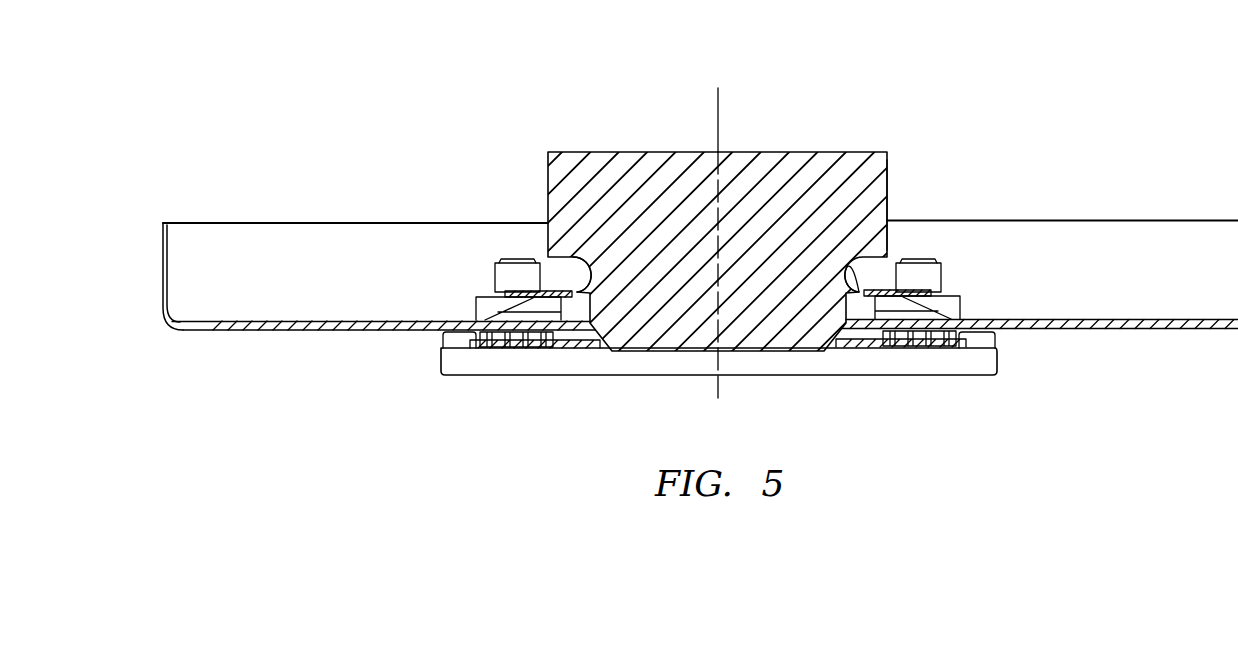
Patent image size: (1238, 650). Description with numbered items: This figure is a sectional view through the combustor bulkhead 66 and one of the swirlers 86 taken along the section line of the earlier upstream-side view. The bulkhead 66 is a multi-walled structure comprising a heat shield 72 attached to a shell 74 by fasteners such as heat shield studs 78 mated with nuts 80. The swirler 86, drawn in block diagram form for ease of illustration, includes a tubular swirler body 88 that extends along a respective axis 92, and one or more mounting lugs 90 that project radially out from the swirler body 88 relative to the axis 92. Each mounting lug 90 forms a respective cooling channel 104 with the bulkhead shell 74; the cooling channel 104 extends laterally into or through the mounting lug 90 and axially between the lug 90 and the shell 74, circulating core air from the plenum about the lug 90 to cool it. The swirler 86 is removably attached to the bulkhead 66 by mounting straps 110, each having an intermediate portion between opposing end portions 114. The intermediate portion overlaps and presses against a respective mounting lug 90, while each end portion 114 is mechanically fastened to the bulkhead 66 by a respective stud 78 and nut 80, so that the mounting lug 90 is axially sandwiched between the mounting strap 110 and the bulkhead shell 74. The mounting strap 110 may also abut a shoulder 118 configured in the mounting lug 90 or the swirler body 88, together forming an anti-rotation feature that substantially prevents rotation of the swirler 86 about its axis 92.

The combustor bulkhead 66 is at (410, 388).
The heat shield 72 is at (480, 377).
The shell 74 is at (228, 332).
The heat shield stud 78 is at (717, 230).
The nut 80 is at (494, 280).
The swirler 86 is at (816, 151).
The swirler body 88 is at (888, 168).
The mounting lug 90 is at (476, 310).
The axis 92 is at (712, 93).
The cooling channel 104 is at (897, 325).
The mounting strap 110 is at (790, 206).
The end portion 114 is at (553, 290).
The shoulder 118 is at (580, 258).